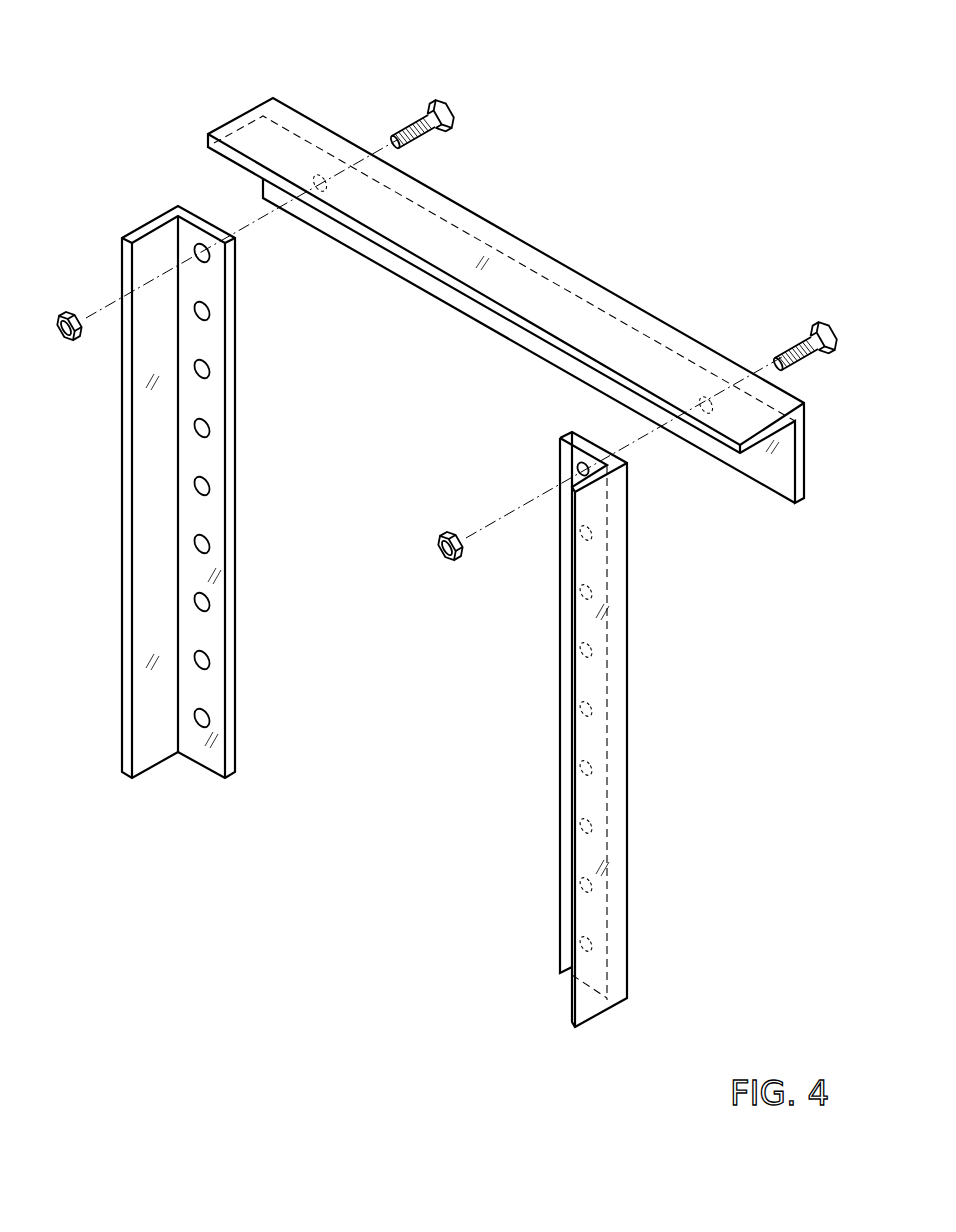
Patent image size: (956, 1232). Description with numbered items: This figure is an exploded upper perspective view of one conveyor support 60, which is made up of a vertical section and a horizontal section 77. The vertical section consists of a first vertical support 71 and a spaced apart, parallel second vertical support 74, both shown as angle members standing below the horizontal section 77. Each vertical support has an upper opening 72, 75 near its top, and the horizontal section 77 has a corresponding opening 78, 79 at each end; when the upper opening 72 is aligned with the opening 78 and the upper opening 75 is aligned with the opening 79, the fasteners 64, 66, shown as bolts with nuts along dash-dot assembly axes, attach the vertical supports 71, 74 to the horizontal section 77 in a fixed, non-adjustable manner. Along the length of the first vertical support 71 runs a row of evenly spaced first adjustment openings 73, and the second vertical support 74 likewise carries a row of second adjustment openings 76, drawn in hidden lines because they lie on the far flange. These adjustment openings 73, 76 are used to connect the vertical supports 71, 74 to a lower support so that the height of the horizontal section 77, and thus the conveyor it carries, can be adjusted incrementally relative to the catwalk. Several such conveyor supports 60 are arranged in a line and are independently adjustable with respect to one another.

The conveyor support 60 is at (614, 126).
The fastener 64 is at (443, 98).
The fastener 66 is at (826, 318).
The first vertical support 71 is at (226, 557).
The upper opening 72 is at (209, 261).
The first adjustment openings 73 is at (214, 318).
The second vertical support 74 is at (578, 735).
The upper opening 75 is at (581, 468).
The second adjustment openings 76 is at (590, 533).
The horizontal section 77 is at (506, 266).
The opening 78 is at (320, 183).
The opening 79 is at (705, 405).